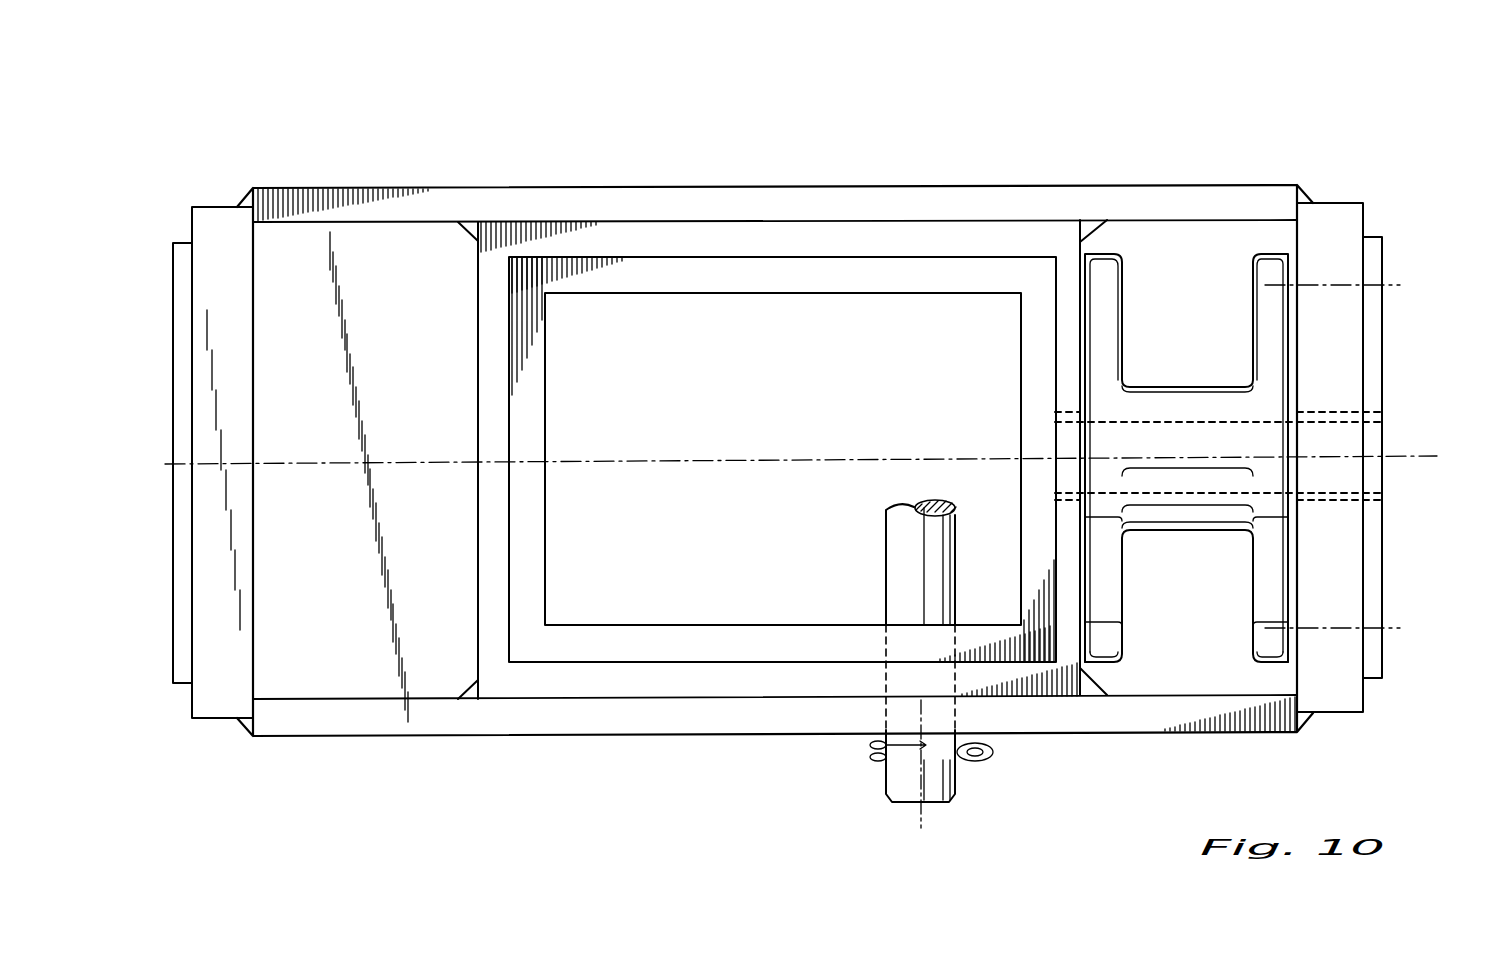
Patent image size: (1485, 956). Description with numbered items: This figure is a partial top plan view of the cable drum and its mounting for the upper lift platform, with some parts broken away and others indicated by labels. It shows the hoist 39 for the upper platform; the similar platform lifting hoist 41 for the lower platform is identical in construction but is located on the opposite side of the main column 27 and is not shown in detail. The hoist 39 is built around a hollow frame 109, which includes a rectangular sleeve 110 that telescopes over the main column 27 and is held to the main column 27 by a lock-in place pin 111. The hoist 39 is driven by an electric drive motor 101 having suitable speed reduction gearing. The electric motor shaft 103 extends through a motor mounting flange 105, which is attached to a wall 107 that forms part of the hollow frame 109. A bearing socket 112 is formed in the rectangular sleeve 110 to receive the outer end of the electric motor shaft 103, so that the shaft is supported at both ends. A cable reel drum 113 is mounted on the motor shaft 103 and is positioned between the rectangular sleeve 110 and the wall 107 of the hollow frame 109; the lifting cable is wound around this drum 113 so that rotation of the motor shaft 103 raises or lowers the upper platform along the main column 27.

The hoist 39 is at (1323, 150).
The platform lifting hoist 41 is at (318, 172).
The main column 27 is at (893, 278).
The electric drive motor 101 is at (1423, 457).
The electric motor shaft 103 is at (1397, 457).
The motor mounting flange 105 is at (1372, 557).
The wall 107 is at (1338, 218).
The hollow frame 109 is at (1180, 195).
The rectangular sleeve 110 is at (803, 232).
The lock-in place pin 111 is at (905, 551).
The bearing socket 112 is at (1057, 418).
The cable reel drum 113 is at (1108, 629).